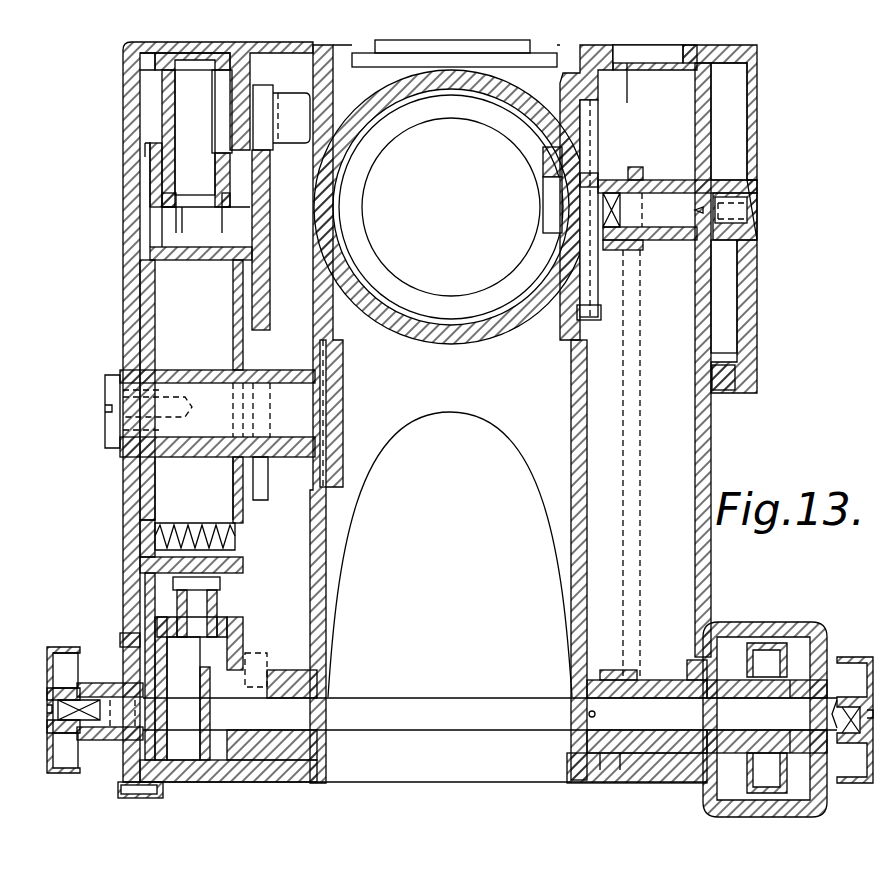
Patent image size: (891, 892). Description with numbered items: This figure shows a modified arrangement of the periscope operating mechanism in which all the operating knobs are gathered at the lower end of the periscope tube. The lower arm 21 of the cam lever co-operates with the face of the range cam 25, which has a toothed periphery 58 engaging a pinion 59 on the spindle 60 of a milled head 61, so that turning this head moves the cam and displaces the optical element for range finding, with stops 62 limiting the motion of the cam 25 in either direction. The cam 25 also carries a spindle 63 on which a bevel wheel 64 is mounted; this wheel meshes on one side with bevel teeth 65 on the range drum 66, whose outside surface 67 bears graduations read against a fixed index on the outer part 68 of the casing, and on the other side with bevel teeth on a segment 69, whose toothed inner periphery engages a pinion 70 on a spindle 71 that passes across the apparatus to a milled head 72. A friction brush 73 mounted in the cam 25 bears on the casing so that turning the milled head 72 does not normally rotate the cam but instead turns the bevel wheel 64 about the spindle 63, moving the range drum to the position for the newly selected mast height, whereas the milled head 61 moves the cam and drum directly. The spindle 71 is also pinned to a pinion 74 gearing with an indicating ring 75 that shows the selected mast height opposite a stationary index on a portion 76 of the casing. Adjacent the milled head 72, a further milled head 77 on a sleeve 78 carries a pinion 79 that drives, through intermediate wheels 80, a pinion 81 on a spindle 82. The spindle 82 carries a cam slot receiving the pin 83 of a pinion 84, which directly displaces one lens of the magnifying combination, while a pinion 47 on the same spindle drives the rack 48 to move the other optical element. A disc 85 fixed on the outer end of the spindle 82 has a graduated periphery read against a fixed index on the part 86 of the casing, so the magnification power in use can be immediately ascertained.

The lower arm of cam lever 21 is at (258, 102).
The range cam 25 is at (262, 210).
The pinion 47 is at (555, 203).
The rectilinear rack 48 is at (545, 160).
The toothed periphery 58 is at (147, 157).
The pinion 59 is at (122, 766).
The spindle 60 is at (100, 706).
The milled head 61 is at (48, 763).
The stops 62 is at (133, 603).
The spindle 63 is at (202, 592).
The bevel wheel 64 is at (214, 618).
The bevel teeth 65 is at (170, 193).
The range drum 66 is at (162, 113).
The outside surface of range drum 67 is at (157, 82).
The outer part of casing 68 is at (140, 58).
The segment 69 is at (240, 647).
The pinion 70 is at (218, 712).
The spindle 71 is at (481, 724).
The milled head 72 is at (846, 778).
The friction brush 73 is at (142, 540).
The pinion 74 is at (593, 677).
The indicating ring 75 is at (648, 760).
The portion of casing 76 is at (690, 64).
The milled head 77 is at (760, 789).
The sleeve 78 is at (717, 740).
The pinion 79 is at (628, 670).
The intermediate wheels 80 is at (641, 502).
The pinion 81 is at (640, 168).
The spindle 82 is at (680, 221).
The pin 83 is at (588, 167).
The pinion 84 is at (588, 140).
The disc 85 is at (748, 163).
The part of casing 86 is at (725, 64).